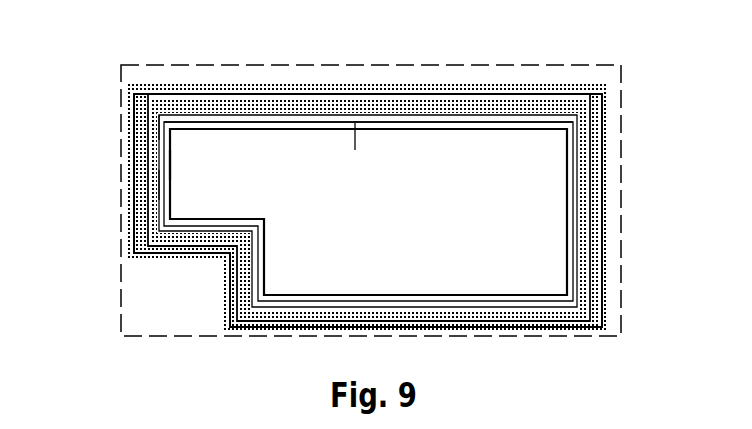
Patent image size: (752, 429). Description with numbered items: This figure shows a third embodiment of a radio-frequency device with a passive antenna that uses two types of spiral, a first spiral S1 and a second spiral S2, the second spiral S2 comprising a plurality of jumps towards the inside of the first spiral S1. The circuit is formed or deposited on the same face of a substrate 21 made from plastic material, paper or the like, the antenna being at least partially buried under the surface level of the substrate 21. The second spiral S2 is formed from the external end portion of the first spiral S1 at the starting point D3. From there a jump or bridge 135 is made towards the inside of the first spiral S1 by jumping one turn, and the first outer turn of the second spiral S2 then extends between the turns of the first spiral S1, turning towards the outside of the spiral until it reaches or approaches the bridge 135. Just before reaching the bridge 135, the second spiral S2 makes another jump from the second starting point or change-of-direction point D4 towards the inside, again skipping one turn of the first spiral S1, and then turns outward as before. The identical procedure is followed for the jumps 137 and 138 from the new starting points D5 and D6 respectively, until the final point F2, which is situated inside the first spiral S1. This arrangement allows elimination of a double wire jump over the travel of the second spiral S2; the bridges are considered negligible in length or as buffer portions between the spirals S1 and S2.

The substrate 21 is at (495, 339).
The jump 135 is at (128, 106).
The jump 137 is at (150, 148).
The jump 138 is at (127, 136).
The first spiral S1 is at (124, 117).
The second spiral S2 is at (359, 141).
The final point F2 is at (355, 123).
The starting point D3 is at (143, 99).
The second starting point D4 is at (165, 118).
The starting point D5 is at (172, 166).
The starting point D6 is at (160, 184).